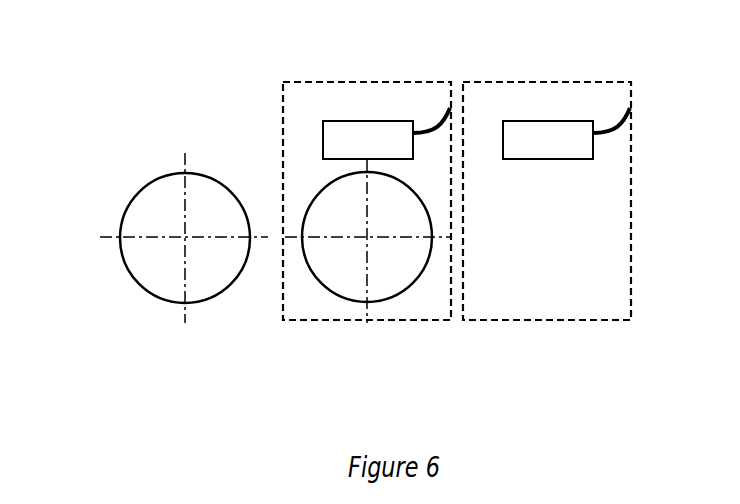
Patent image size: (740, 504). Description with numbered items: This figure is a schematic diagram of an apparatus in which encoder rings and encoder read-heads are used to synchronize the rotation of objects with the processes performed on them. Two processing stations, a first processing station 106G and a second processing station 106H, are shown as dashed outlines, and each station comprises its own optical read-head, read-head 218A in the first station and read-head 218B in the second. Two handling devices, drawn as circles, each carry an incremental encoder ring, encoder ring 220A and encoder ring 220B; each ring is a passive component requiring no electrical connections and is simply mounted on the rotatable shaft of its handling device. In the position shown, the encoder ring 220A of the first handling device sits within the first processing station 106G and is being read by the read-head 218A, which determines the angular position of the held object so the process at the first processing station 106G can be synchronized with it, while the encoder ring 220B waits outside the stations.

The first processing station 106G is at (316, 77).
The second processing station 106H is at (504, 77).
The read-head 218A is at (403, 128).
The read-head 218B is at (583, 128).
The encoder ring 220A is at (407, 282).
The encoder ring 220B is at (130, 255).